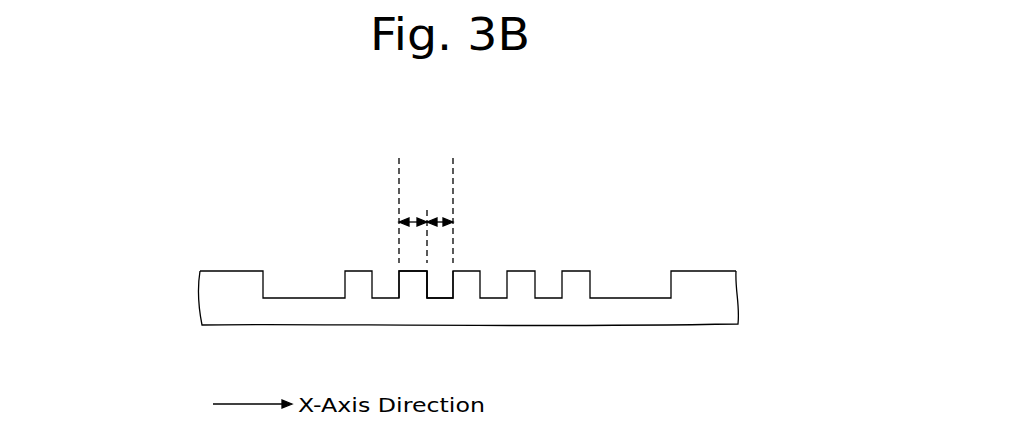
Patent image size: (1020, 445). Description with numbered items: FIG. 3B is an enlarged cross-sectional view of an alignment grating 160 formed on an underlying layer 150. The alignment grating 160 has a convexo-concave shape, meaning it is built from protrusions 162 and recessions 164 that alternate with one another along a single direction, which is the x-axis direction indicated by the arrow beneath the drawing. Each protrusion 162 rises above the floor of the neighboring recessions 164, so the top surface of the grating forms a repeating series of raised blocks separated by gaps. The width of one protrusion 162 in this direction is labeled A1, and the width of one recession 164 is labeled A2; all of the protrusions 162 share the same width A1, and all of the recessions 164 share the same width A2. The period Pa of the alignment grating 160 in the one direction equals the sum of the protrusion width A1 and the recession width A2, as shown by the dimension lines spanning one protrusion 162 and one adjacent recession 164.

The substrate 150 is at (725, 300).
The alignment grating 160 is at (495, 253).
The protrusion 162 is at (407, 283).
The recession 164 is at (442, 282).
The period Pa is at (399, 168).
The width of the protrusion A1 is at (412, 218).
The width of the recession A2 is at (438, 218).